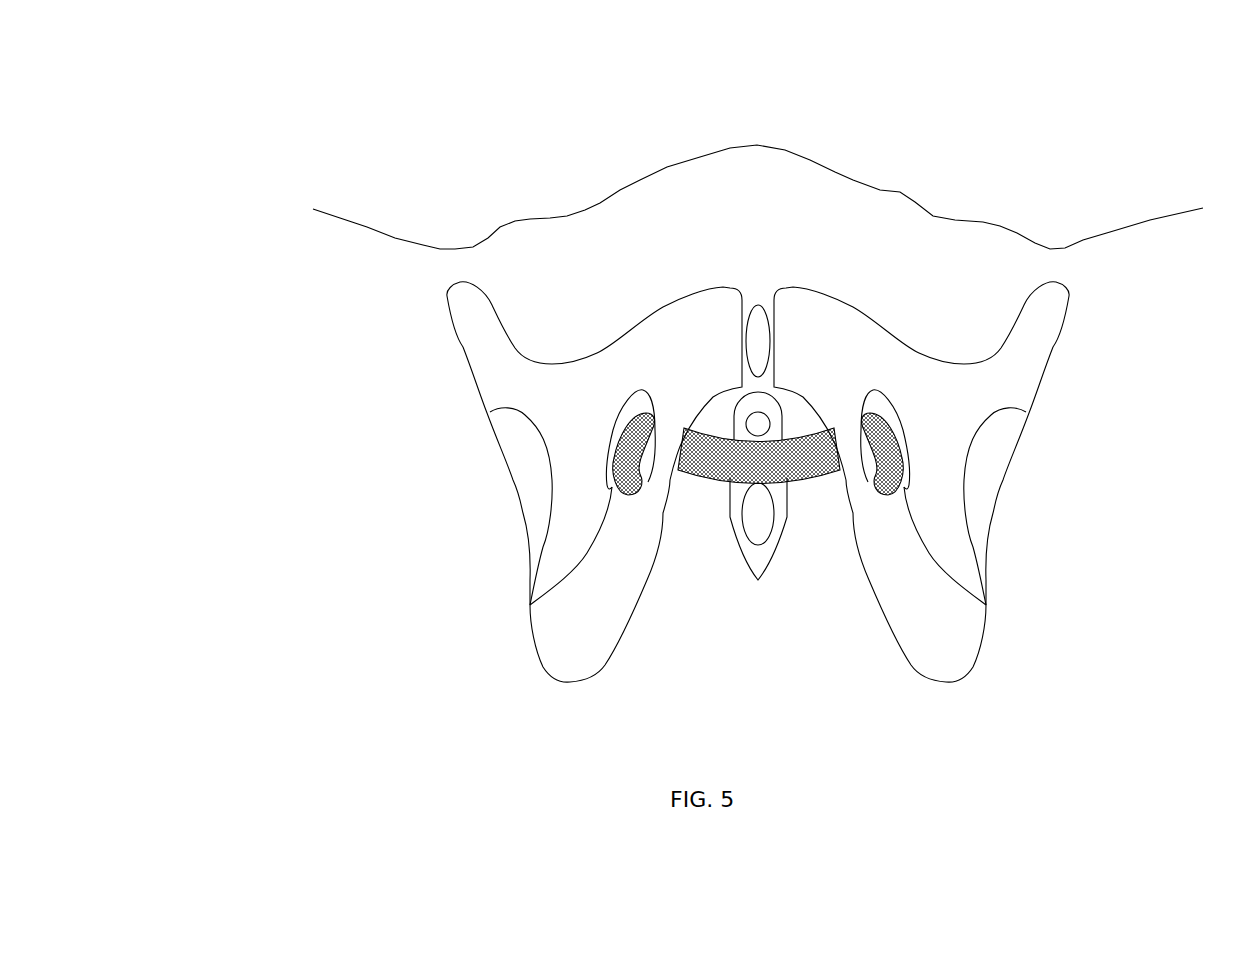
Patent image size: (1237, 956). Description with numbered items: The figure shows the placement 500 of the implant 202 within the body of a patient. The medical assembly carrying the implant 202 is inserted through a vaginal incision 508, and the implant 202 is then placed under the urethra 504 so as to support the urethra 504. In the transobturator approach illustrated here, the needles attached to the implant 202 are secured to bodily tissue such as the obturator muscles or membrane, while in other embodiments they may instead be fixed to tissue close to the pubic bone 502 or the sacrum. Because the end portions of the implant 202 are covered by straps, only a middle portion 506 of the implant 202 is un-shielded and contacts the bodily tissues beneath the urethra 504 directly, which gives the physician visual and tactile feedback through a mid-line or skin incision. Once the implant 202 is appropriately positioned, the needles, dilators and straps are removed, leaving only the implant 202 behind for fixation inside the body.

The image of patient pelvis 500 is at (230, 141).
The pubic bone 502 is at (853, 357).
The implant 202 is at (905, 458).
The urethra 504 is at (757, 430).
The middle portion 506 is at (770, 462).
The vaginal incision 508 is at (768, 508).